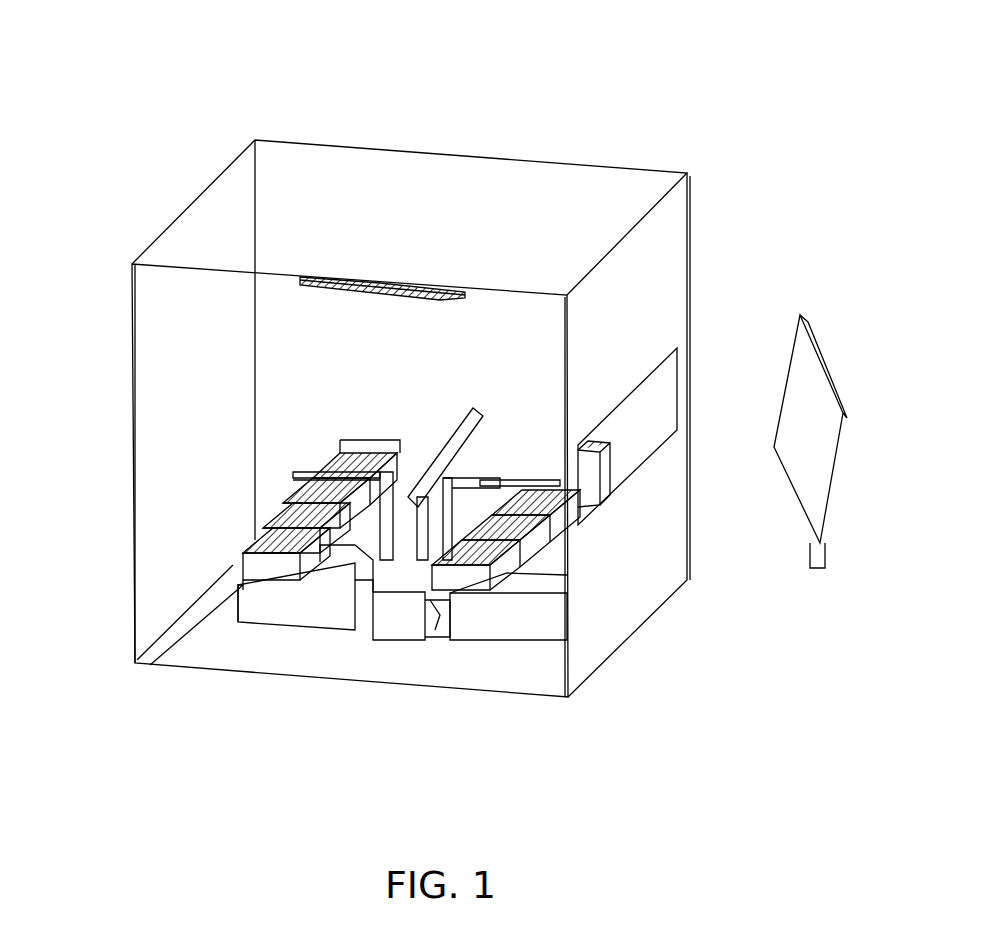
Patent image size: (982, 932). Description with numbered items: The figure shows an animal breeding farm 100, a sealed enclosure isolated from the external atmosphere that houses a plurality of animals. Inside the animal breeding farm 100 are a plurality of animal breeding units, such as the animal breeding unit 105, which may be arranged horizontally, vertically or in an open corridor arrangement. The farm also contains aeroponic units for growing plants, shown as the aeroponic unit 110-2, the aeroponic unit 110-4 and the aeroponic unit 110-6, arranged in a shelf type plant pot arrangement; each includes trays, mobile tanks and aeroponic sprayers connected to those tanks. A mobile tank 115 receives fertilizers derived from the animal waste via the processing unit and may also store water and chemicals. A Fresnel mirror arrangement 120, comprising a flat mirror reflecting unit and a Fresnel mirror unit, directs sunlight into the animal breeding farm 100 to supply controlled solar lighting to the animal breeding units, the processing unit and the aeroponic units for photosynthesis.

The animal breeding farm 100 is at (527, 98).
The animal breeding unit 105 is at (413, 628).
The aeroponic unit 110-2 is at (263, 567).
The aeroponic unit 110-4 is at (277, 522).
The aeroponic unit 110-6 is at (288, 505).
The mobile tank 115 is at (285, 610).
The Fresnel mirror arrangement 120 is at (375, 291).